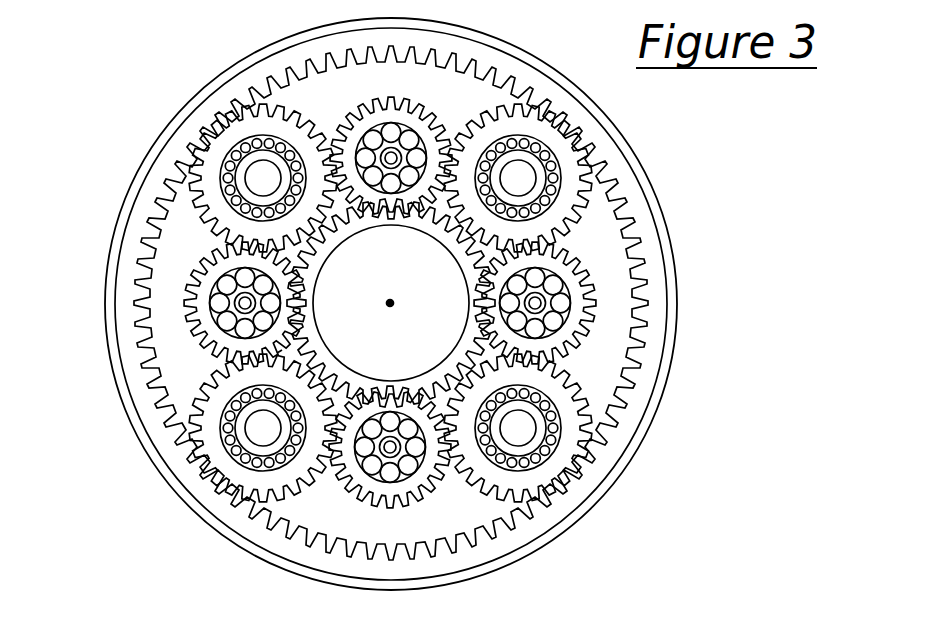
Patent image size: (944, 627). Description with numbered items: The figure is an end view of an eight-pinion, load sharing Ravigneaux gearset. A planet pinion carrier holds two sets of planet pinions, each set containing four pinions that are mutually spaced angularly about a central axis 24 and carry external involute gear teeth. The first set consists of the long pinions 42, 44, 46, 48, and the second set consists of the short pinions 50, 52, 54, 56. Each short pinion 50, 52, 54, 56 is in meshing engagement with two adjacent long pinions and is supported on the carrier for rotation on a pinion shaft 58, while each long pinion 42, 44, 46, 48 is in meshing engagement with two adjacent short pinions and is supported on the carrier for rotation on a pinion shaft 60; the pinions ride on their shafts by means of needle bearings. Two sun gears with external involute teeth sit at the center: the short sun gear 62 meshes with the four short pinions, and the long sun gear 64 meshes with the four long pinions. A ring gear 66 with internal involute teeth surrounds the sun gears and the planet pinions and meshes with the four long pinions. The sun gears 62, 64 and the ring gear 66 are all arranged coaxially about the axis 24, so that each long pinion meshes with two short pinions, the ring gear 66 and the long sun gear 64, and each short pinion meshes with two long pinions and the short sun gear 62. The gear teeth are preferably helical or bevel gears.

The central axis 24 is at (389, 304).
The long pinion 42 is at (547, 137).
The long pinion 44 is at (550, 465).
The long pinion 46 is at (242, 475).
The long pinion 48 is at (223, 143).
The short pinion 50 is at (382, 118).
The short pinion 52 is at (590, 275).
The short pinion 54 is at (393, 488).
The short pinion 56 is at (207, 322).
The pinion shaft 58 is at (245, 303).
The pinion shaft 60 is at (518, 178).
The short sun gear 62 is at (373, 271).
The long sun gear 64 is at (277, 353).
The ring gear 66 is at (637, 179).